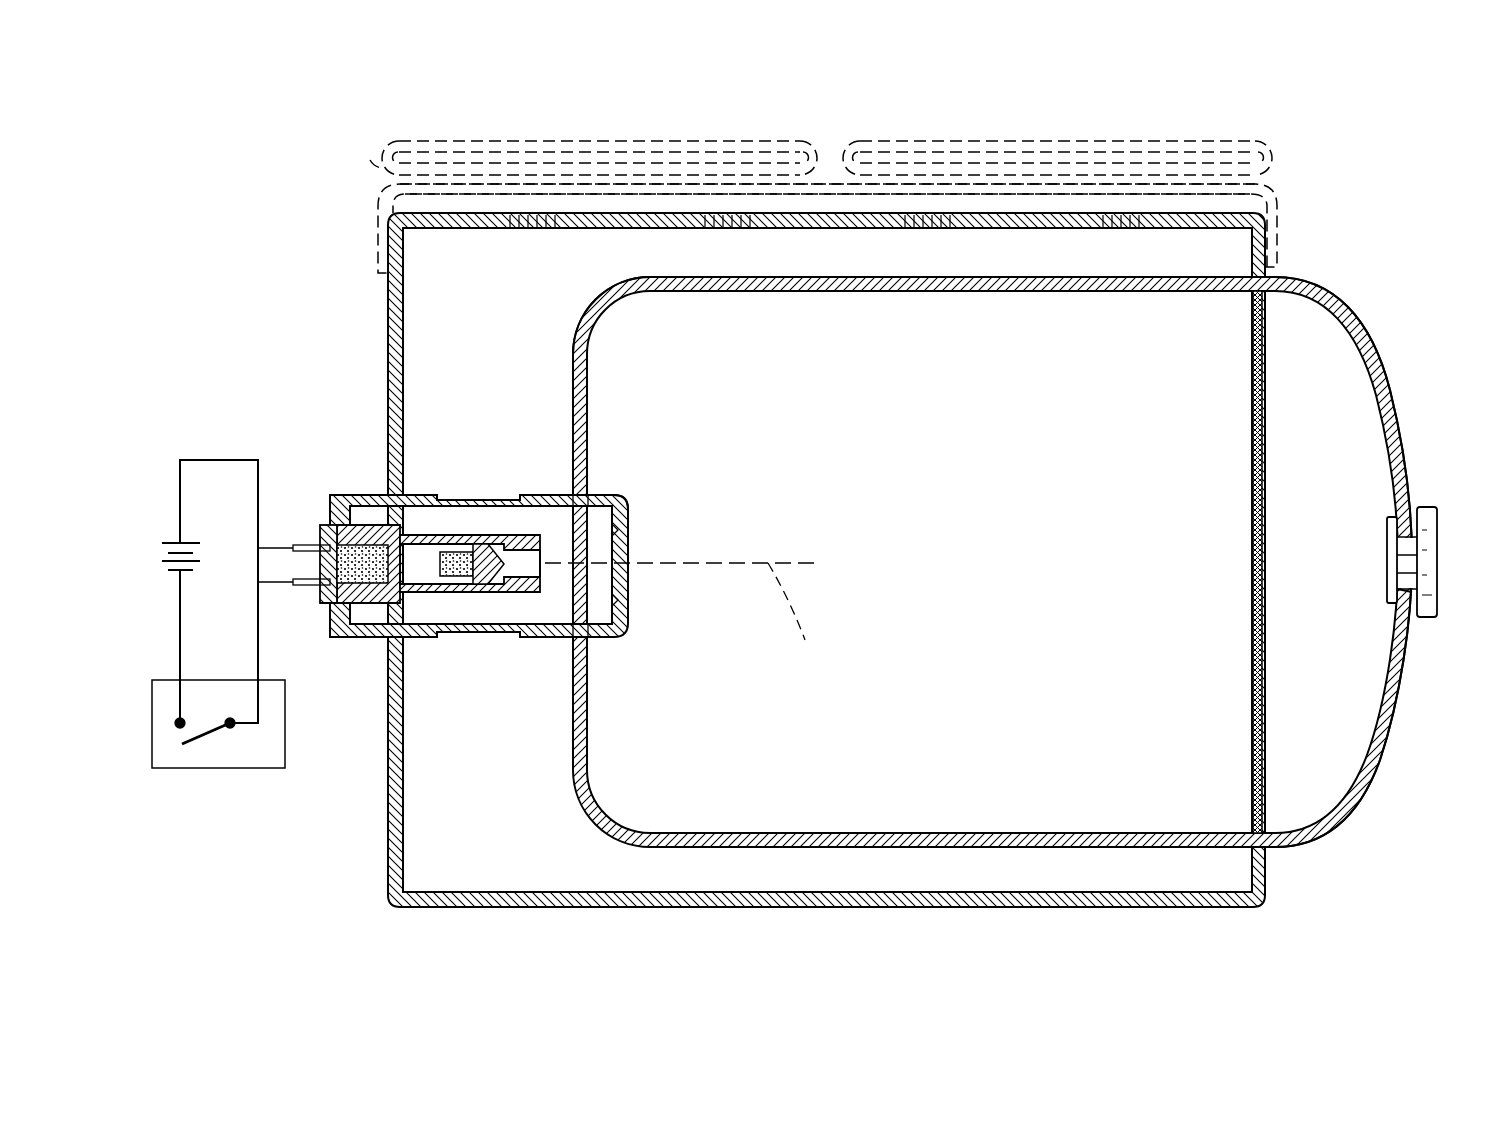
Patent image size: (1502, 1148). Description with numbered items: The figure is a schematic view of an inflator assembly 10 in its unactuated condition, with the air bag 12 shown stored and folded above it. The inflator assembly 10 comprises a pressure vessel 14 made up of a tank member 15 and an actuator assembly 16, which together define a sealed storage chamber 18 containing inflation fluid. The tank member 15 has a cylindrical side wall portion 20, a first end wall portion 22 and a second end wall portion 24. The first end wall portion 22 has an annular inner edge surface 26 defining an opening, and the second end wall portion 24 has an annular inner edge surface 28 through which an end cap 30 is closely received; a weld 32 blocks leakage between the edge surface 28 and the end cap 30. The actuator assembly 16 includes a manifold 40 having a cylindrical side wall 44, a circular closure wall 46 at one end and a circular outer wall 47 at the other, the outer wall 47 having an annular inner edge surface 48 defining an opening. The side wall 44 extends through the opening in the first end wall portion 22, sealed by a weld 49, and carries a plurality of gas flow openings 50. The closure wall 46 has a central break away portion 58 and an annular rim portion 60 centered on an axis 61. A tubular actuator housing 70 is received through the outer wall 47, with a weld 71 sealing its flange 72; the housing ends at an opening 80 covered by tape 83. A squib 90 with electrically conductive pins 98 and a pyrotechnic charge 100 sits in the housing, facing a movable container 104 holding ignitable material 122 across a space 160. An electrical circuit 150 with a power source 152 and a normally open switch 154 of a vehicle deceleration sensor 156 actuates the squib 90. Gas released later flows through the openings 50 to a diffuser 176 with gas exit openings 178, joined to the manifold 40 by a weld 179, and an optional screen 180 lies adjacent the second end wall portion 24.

The inflator assembly 10 is at (265, 350).
The air bag 12 is at (372, 158).
The pressure vessel 14 is at (783, 512).
The tank member 15 is at (1367, 307).
The actuator assembly 16 is at (535, 551).
The storage chamber 18 is at (1328, 395).
The cylindrical side wall portion 20 is at (980, 535).
The first end wall portion 22 is at (595, 346).
The second end wall portion 24 is at (1344, 535).
The annular inner edge surface 26 is at (596, 497).
The annular inner edge surface 28 is at (1400, 540).
The end cap 30 is at (1432, 508).
The weld 32 is at (1413, 592).
The manifold 40 is at (498, 556).
The cylindrical side wall 44 is at (545, 497).
The closure wall 46 is at (628, 512).
The outer wall 47 is at (345, 494).
The annular inner edge surface 48 is at (322, 542).
The weld 49 is at (570, 642).
The gas flow openings 50 is at (456, 457).
The break away portion 58 is at (618, 583).
The rim portion 60 is at (618, 513).
The axis 61 is at (693, 616).
The actuator housing 70 is at (390, 522).
The weld 71 is at (330, 633).
The flange 72 is at (354, 595).
The opening 80 is at (540, 553).
The tape 83 is at (538, 578).
The squib 90 is at (318, 601).
The electrically conductive pins 98 is at (300, 581).
The pyrotechnic charge 100 is at (372, 600).
The movable container 104 is at (490, 582).
The ignitable material 122 is at (456, 592).
The electrical circuit 150 is at (221, 624).
The power source 152 is at (162, 550).
The switch 154 is at (212, 735).
The vehicle deceleration sensor 156 is at (207, 768).
The space 160 is at (498, 568).
The diffuser 176 is at (388, 328).
The gas exit openings 178 is at (1123, 220).
The weld 179 is at (392, 492).
The screen 180 is at (1252, 445).